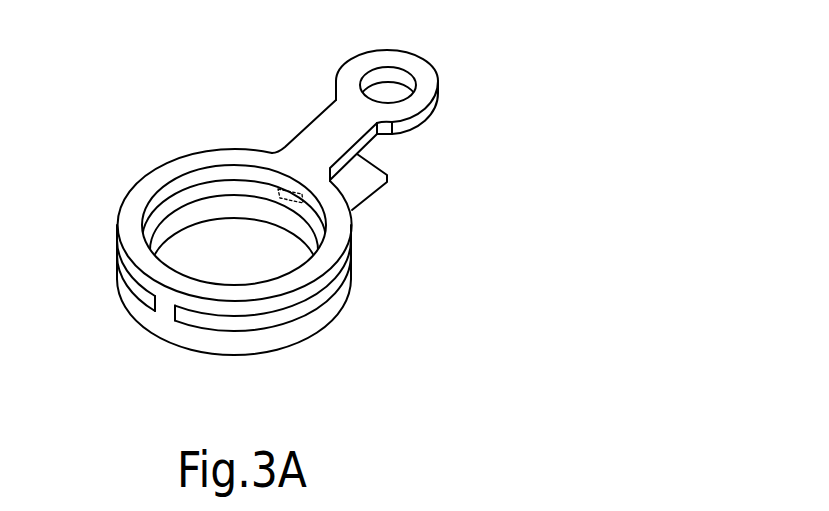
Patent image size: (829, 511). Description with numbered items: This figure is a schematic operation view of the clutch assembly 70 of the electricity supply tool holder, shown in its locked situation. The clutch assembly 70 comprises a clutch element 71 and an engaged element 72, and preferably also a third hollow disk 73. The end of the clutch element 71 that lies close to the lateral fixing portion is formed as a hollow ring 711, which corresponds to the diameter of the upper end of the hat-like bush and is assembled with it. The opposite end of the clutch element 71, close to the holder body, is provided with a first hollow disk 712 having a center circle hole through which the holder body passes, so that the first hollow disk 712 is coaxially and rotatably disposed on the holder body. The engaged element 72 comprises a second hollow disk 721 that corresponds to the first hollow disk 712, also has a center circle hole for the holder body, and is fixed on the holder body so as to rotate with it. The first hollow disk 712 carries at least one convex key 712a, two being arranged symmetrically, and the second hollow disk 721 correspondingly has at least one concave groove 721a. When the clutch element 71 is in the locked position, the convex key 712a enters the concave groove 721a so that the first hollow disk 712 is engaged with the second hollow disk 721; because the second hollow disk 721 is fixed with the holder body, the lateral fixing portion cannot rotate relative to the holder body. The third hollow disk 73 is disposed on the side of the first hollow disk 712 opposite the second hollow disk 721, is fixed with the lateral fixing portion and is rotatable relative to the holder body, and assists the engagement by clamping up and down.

The clutch assembly 70 is at (293, 203).
The clutch element 71 is at (160, 158).
The hollow ring 711 is at (430, 90).
The first hollow disk 712 is at (232, 152).
The convex key 712a is at (167, 309).
The engaged element 72 is at (117, 252).
The second hollow disk 721 is at (320, 300).
The concave groove 721a is at (182, 318).
The third hollow disk 73 is at (130, 302).